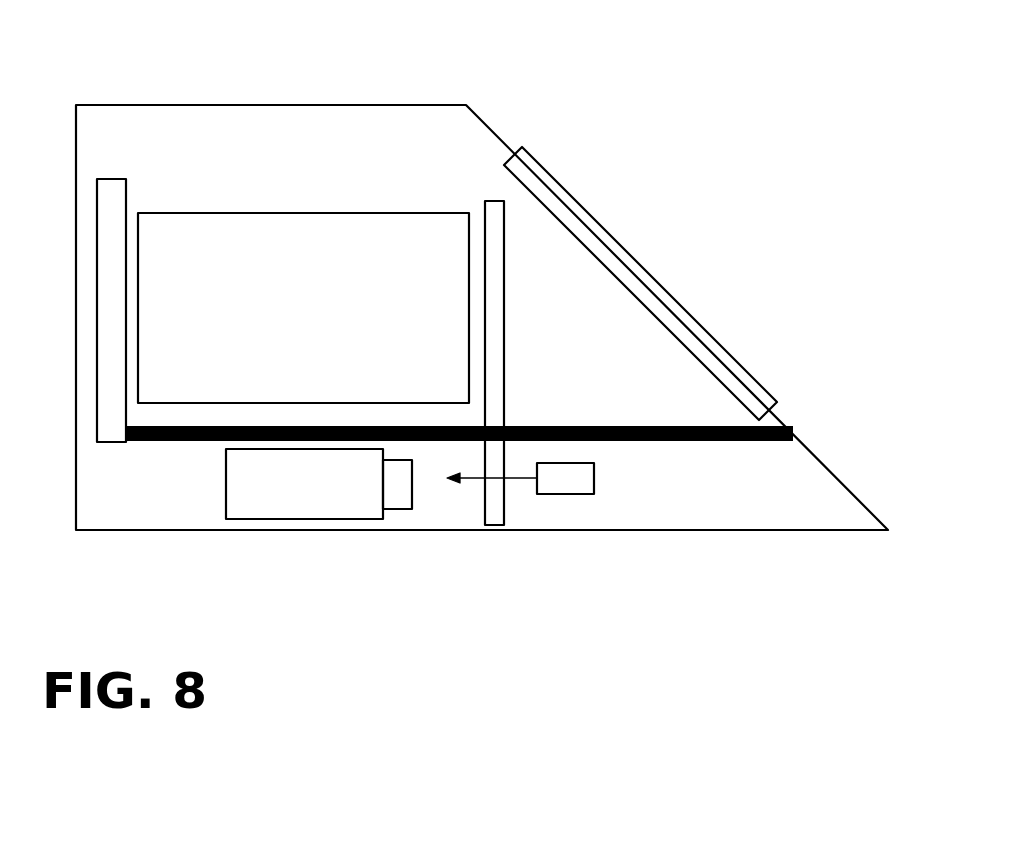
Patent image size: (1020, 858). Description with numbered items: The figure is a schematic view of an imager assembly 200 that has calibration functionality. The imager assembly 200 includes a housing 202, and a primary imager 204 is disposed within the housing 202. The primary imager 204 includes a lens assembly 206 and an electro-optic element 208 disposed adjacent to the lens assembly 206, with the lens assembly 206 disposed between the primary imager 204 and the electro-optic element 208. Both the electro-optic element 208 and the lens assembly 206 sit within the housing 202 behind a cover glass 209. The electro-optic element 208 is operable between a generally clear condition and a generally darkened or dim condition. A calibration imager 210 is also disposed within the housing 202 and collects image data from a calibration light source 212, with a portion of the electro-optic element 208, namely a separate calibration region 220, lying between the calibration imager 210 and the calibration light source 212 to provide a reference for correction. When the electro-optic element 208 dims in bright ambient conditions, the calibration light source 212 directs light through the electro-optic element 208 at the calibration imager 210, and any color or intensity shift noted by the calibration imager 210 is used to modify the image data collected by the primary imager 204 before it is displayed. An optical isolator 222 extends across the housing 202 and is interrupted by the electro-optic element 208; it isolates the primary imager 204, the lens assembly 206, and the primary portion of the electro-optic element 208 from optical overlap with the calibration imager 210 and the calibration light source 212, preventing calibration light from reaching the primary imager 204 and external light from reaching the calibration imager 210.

The imager assembly 200 is at (750, 150).
The housing 202 is at (385, 105).
The primary imager 204 is at (110, 214).
The lens assembly 206 is at (324, 213).
The electro-optic element 208 is at (489, 201).
The cover glass 209 is at (708, 330).
The calibration imager 210 is at (350, 519).
The calibration light source 212 is at (567, 494).
The calibration region 220 is at (485, 507).
The optical isolator 222 is at (147, 442).